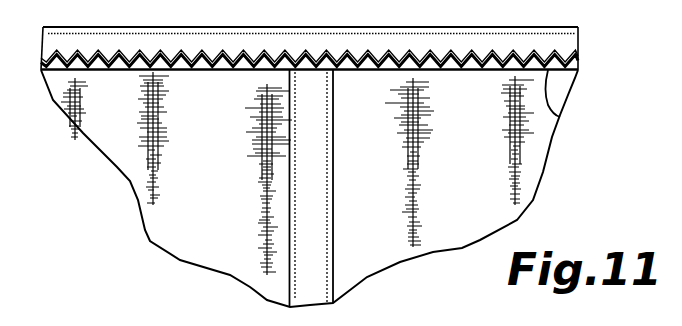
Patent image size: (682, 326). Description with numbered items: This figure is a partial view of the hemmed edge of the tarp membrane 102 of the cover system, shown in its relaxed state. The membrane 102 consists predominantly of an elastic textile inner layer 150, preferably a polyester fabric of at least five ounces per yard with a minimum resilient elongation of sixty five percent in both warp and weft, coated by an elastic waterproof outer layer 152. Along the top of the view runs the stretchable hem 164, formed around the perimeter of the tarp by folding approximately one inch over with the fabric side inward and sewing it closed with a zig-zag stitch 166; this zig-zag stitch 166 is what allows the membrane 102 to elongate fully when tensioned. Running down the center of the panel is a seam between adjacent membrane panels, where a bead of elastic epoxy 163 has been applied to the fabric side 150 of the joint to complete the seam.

The membrane 102 is at (115, 191).
The elastic textile inner layer 150 is at (479, 156).
The elastic waterproof outer layer 152 is at (387, 36).
The bead of elastic epoxy 163 is at (316, 258).
The stretchable hem 164 is at (560, 117).
The zig-zag stitch 166 is at (250, 62).